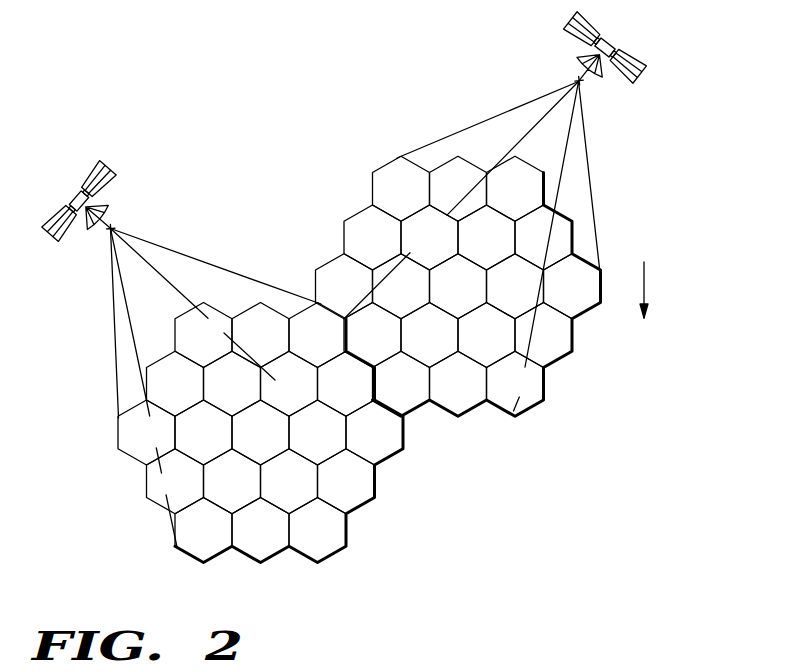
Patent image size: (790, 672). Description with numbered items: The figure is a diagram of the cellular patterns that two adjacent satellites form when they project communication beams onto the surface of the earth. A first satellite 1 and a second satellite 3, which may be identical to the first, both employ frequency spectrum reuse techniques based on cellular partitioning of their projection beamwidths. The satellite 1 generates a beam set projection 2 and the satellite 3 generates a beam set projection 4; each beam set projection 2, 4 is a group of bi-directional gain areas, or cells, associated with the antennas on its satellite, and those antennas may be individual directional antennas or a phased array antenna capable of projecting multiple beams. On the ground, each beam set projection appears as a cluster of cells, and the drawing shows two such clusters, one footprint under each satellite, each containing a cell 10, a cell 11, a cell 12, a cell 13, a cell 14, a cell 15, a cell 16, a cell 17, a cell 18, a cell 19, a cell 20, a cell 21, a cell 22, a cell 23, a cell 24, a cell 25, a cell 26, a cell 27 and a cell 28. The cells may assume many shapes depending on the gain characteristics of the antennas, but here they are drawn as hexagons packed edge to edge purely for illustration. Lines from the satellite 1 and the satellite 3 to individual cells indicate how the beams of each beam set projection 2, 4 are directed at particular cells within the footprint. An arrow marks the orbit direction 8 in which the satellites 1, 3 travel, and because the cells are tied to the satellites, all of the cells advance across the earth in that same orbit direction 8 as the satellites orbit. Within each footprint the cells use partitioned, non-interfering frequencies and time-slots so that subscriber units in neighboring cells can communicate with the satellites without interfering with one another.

The satellite 1 is at (66, 185).
The beam set projection 2 is at (145, 244).
The satellite 3 is at (615, 33).
The beam set projection 4 is at (549, 114).
The orbit direction 8 is at (645, 284).
The cell 10 is at (216, 346).
The cell 11 is at (248, 346).
The cell 12 is at (330, 346).
The cell 13 is at (163, 395).
The cell 14 is at (220, 395).
The cell 15 is at (277, 395).
The cell 16 is at (334, 395).
The cell 17 is at (134, 444).
The cell 18 is at (216, 444).
The cell 19 is at (248, 444).
The cell 20 is at (330, 444).
The cell 21 is at (362, 444).
The cell 22 is at (163, 493).
The cell 23 is at (220, 493).
The cell 24 is at (277, 493).
The cell 25 is at (334, 493).
The cell 26 is at (216, 542).
The cell 27 is at (248, 542).
The cell 28 is at (330, 542).